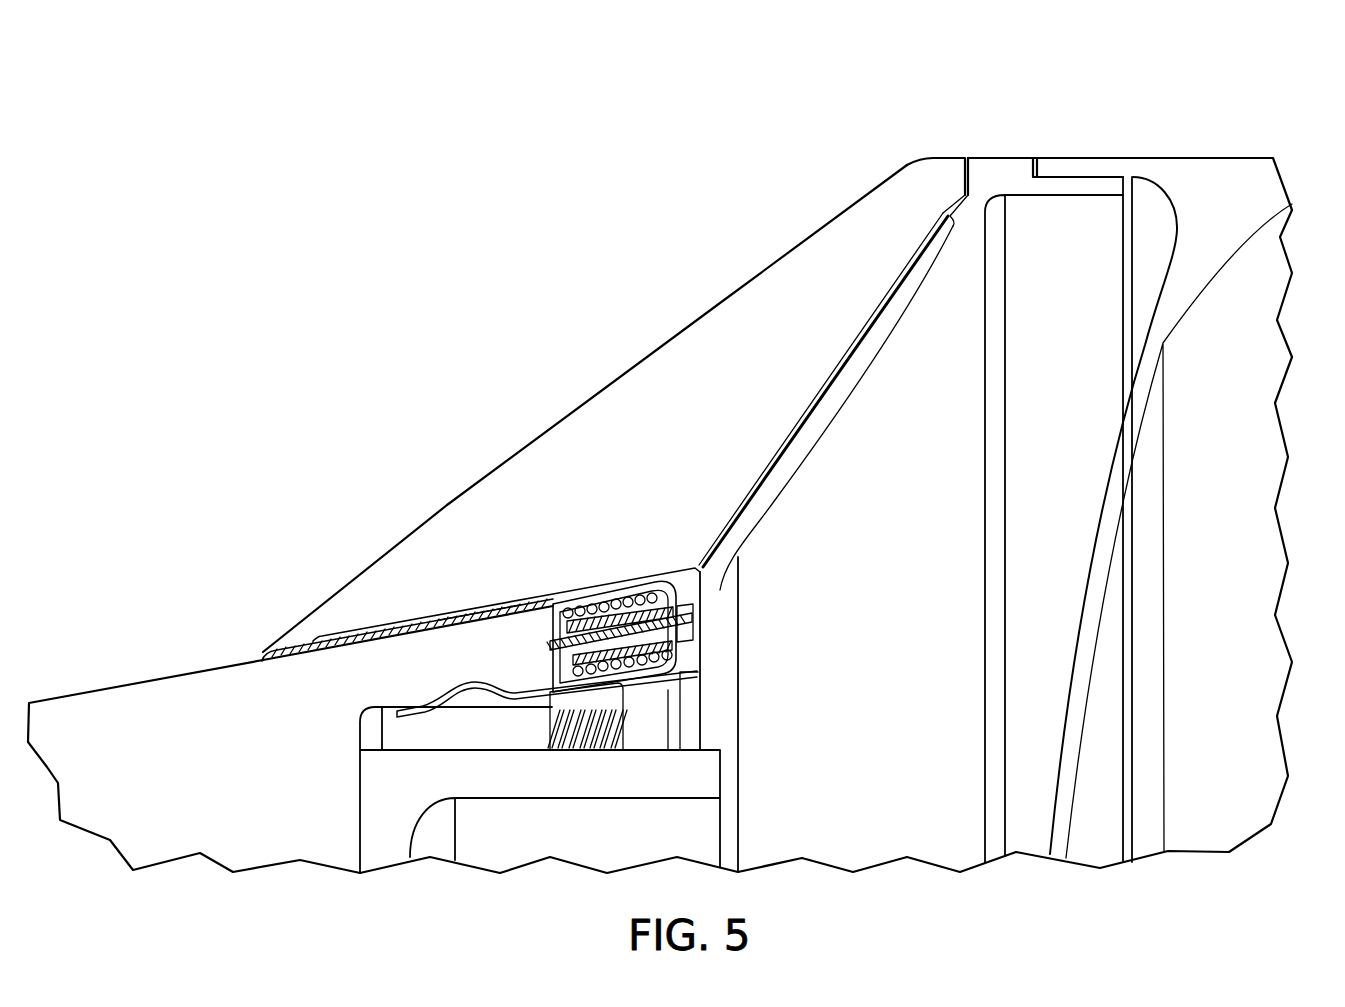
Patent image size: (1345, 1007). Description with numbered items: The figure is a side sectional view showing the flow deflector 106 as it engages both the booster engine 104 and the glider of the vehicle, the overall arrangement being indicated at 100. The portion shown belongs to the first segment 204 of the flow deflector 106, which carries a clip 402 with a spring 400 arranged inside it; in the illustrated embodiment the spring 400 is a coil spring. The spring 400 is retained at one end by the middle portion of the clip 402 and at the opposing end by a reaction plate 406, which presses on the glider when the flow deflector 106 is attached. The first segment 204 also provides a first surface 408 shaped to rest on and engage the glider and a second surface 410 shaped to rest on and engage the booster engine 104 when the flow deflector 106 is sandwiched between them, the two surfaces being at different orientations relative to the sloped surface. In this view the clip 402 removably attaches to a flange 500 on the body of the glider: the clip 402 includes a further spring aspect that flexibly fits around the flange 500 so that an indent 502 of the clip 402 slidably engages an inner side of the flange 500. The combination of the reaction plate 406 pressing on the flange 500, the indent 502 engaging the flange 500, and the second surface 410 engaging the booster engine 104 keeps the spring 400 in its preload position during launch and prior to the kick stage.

The door assembly 100 is at (1258, 120).
The booster engine 104 is at (1158, 543).
The flow deflector 106 is at (776, 242).
The first segment 204 is at (553, 408).
The spring 400 is at (681, 653).
The clip 402 is at (373, 625).
The reaction plate 406 is at (632, 652).
The first surface 408 is at (290, 638).
The second surface 410 is at (952, 235).
The flange 500 is at (476, 628).
The indent 502 is at (473, 710).